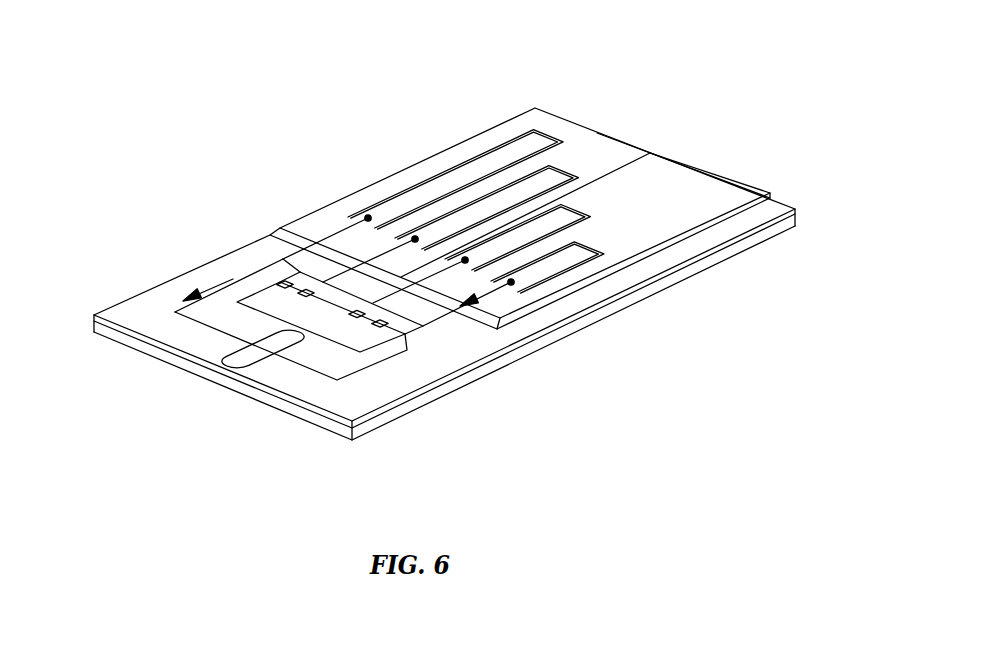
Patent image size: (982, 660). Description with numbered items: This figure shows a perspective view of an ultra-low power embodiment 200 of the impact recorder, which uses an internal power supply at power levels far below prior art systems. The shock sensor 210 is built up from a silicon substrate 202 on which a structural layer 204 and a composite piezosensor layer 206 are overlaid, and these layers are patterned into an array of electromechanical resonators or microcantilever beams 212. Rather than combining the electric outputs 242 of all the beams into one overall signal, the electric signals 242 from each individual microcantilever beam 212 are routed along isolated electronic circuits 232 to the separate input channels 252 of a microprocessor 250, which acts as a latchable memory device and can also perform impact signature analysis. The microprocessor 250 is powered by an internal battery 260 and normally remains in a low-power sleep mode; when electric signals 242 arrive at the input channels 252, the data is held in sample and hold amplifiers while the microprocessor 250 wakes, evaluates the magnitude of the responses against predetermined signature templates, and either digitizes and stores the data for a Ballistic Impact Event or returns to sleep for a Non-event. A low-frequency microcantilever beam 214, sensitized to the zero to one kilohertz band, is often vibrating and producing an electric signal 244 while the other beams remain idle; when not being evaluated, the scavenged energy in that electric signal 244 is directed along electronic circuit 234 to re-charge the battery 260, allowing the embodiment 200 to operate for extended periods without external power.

The impact recorder embodiment 200 is at (178, 104).
The silicon substrate 202 is at (779, 230).
The structural layer 204 is at (711, 234).
The composite piezosensor layer 206 is at (625, 265).
The shock sensor 210 is at (703, 112).
The microcantilever beams 212 is at (578, 257).
The low-frequency microcantilever beam 214 is at (487, 165).
The ground trace 232 is at (440, 320).
The electronic circuit 234 is at (272, 264).
The electric signals 242 is at (485, 300).
The electric signal 244 is at (214, 288).
The microprocessor 250 is at (342, 346).
The input channels 252 is at (375, 327).
The internal battery 260 is at (220, 354).